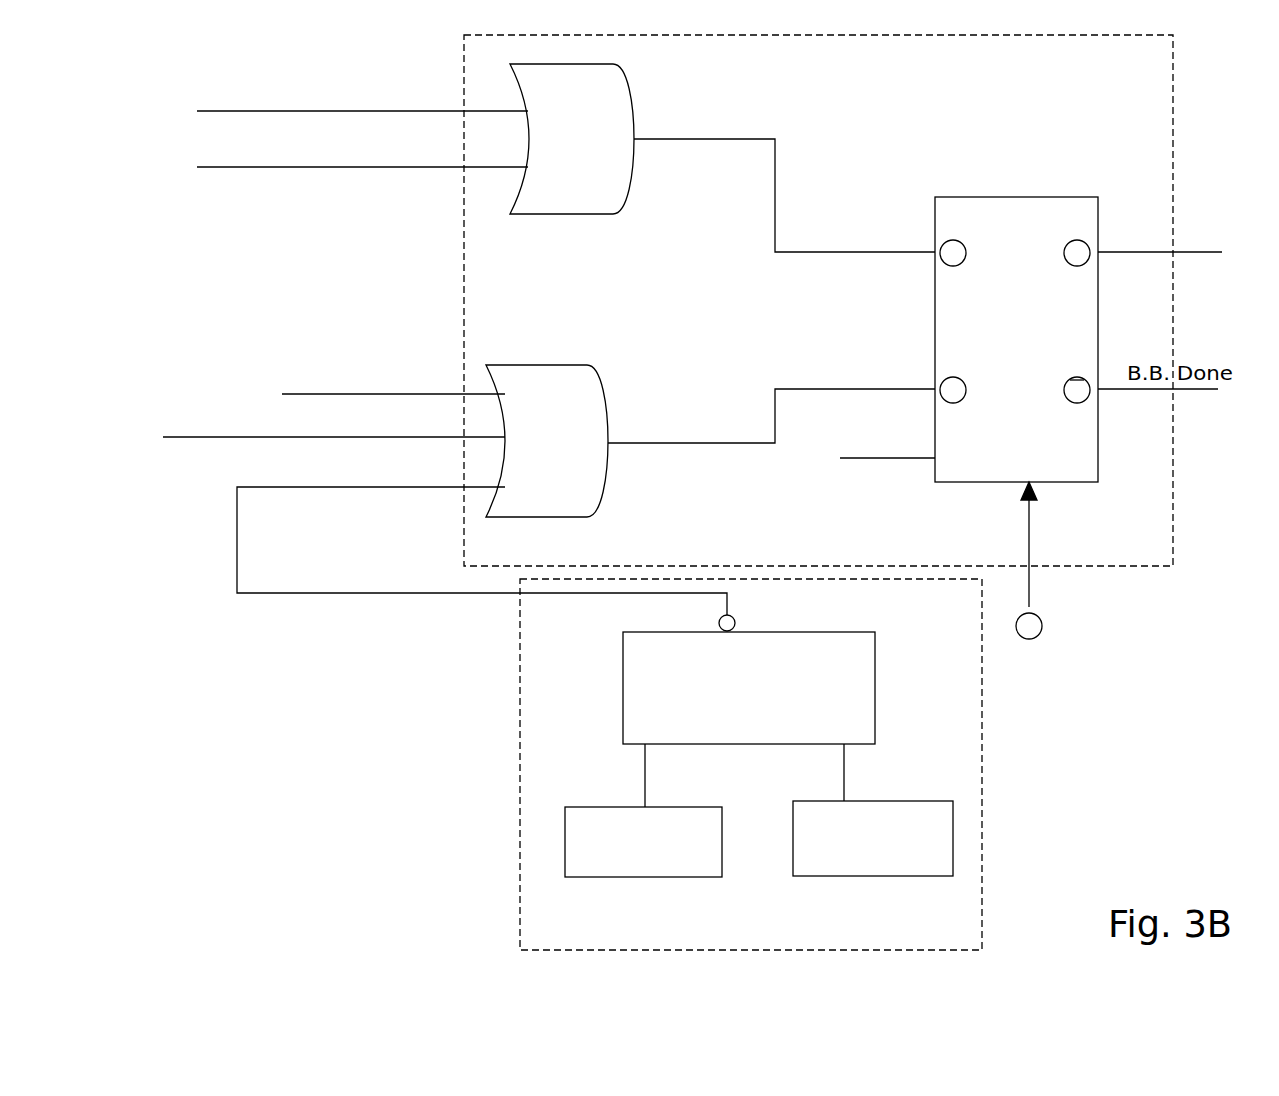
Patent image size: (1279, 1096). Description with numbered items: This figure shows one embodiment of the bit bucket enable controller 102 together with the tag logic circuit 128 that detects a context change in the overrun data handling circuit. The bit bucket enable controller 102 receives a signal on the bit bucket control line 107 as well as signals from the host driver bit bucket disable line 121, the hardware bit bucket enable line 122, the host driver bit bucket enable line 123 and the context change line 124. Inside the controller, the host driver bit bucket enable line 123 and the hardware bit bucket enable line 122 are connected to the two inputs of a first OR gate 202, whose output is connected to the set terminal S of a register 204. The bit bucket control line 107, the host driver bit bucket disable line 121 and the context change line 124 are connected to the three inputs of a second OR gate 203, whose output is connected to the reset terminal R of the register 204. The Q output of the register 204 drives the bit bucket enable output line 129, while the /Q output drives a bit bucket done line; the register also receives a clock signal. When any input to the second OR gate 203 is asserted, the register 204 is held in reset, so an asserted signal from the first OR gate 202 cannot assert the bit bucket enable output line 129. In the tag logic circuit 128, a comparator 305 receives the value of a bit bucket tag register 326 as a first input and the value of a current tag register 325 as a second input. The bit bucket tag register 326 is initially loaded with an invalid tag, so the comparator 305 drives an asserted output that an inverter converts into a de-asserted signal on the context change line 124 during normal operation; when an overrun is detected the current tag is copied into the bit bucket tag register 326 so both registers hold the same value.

The bit bucket enable controller 102 is at (818, 300).
The bit bucket control line 107 is at (305, 390).
The host driver bit bucket disable line 121 is at (258, 445).
The hardware bit bucket enable line 122 is at (320, 178).
The host driver bit bucket enable line 123 is at (205, 97).
The context change line 124 is at (277, 493).
The tag logic circuit 128 is at (751, 764).
The bit bucket enable output line 129 is at (1187, 260).
The first OR gate 202 is at (598, 188).
The second OR gate 203 is at (588, 426).
The register 204 is at (962, 213).
The comparator 305 is at (852, 677).
The current tag register 325 is at (843, 858).
The bit bucket tag register 326 is at (612, 862).